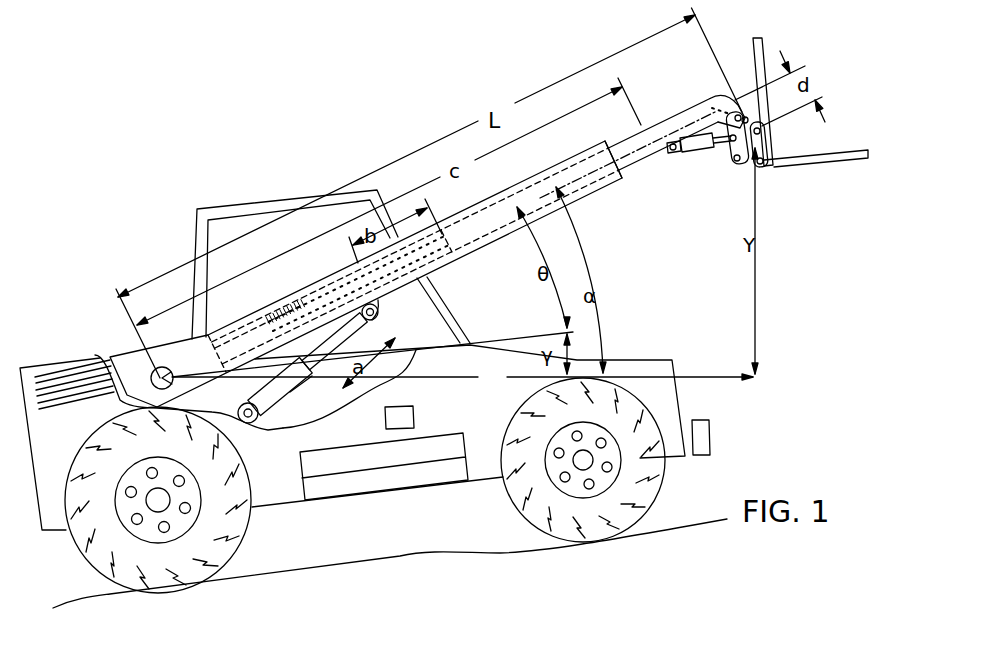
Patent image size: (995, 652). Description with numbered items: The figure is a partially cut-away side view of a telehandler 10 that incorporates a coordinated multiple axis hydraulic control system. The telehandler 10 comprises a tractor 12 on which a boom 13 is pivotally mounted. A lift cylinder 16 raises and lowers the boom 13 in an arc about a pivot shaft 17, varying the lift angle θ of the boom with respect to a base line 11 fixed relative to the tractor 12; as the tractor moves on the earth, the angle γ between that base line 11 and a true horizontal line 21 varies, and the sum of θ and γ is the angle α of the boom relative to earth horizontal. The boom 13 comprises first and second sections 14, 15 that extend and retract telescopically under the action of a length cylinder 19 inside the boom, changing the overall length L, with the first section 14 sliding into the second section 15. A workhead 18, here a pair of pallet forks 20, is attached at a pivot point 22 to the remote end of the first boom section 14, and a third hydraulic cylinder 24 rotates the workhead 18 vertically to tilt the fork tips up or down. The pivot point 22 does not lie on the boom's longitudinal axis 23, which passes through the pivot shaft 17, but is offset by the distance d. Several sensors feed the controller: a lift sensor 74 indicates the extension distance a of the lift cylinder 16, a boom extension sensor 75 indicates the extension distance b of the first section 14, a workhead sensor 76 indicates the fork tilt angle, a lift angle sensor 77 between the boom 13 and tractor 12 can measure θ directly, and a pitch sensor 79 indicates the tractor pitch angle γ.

The telehandler 10 is at (727, 378).
The base line 11 is at (520, 335).
The tractor 12 is at (630, 366).
The boom 13 is at (467, 262).
The first boom section 14 is at (660, 148).
The second boom section 15 is at (578, 190).
The lift cylinder 16 is at (262, 408).
The pivot shaft 17 is at (140, 350).
The workhead 18 is at (808, 167).
The length cylinder 19 is at (252, 340).
The pallet forks 20 is at (835, 160).
The true horizontal line 21 is at (693, 375).
The pivot point 22 is at (770, 128).
The longitudinal axis 23 is at (563, 185).
The third hydraulic cylinder 24 is at (697, 152).
The lift sensor 74 is at (308, 382).
The boom extension sensor 75 is at (286, 300).
The workhead sensor 76 is at (708, 100).
The lift angle sensor 77 is at (100, 358).
The pitch sensor 79 is at (411, 412).